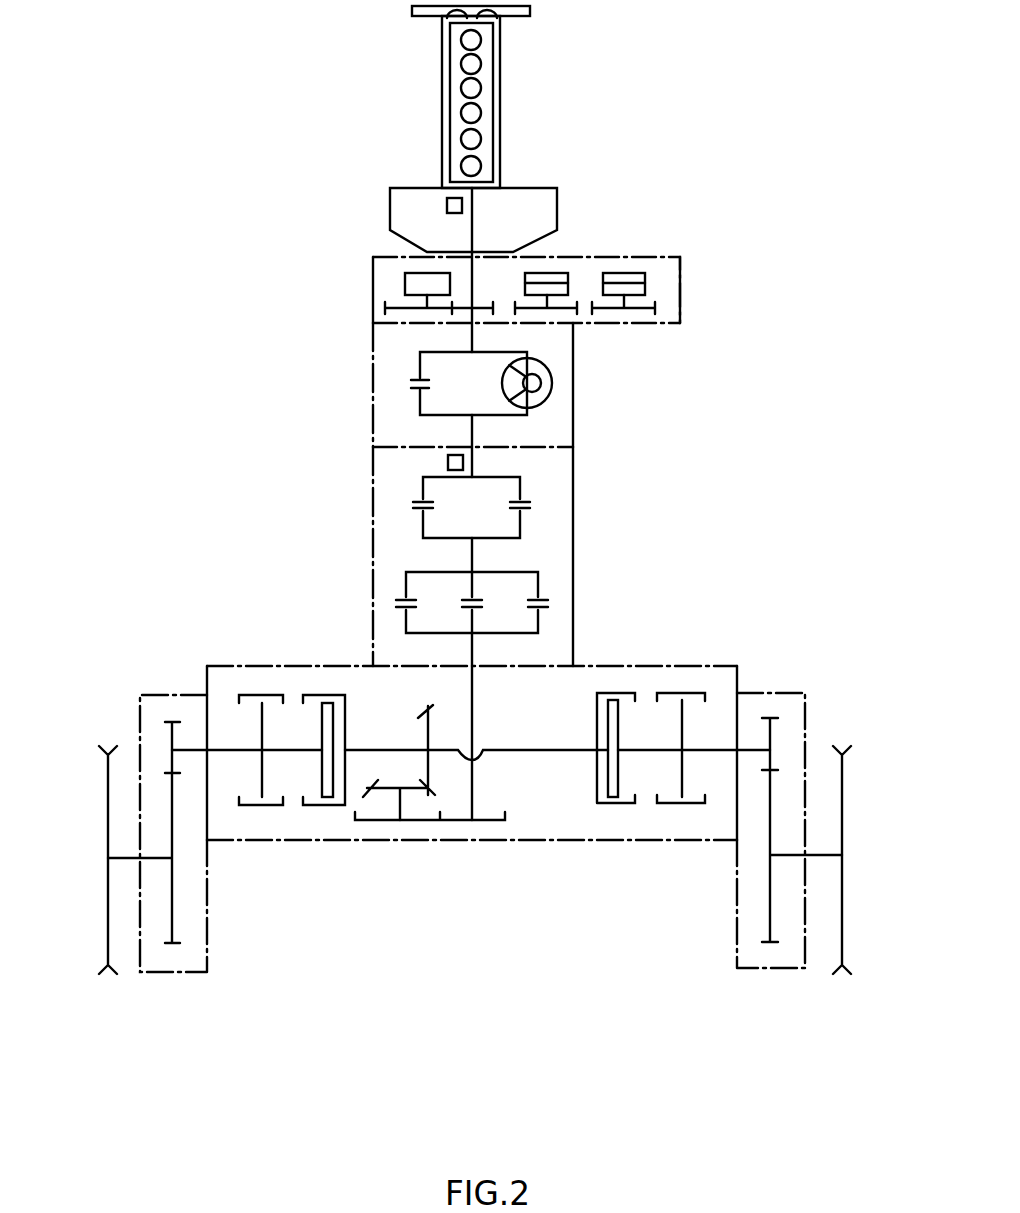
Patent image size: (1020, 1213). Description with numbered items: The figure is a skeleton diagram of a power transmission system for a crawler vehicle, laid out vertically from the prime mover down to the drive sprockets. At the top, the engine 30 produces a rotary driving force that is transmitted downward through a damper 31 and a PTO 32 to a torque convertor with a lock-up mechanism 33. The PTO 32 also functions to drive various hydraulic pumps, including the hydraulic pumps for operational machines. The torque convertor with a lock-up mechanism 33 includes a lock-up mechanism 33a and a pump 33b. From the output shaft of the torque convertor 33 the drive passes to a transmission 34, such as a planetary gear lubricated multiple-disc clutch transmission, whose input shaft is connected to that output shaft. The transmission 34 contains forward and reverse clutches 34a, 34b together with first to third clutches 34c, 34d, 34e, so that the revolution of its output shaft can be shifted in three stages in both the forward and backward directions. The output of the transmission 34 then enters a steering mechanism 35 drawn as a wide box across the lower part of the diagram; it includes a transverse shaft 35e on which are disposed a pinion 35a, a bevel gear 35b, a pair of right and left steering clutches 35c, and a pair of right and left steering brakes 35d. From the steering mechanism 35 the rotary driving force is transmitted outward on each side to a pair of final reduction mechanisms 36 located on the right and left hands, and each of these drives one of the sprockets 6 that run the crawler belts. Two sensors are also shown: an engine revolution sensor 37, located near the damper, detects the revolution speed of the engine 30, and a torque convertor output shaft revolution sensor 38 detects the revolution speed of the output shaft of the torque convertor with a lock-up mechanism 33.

The sprocket 6 is at (108, 818).
The engine 30 is at (500, 78).
The damper 31 is at (540, 205).
The PTO 32 is at (669, 257).
The torque convertor with a lock-up mechanism 33 is at (483, 385).
The lock-up mechanism 33a is at (407, 385).
The pump 33b is at (548, 366).
The transmission 34 is at (480, 541).
The forward clutch 34a is at (413, 505).
The reverse clutch 34b is at (530, 500).
The first clutch 34c is at (398, 605).
The second clutch 34d is at (472, 595).
The third clutch 34e is at (548, 603).
The steering mechanism 35 is at (487, 775).
The pinion 35a is at (412, 792).
The bevel gear 35b is at (432, 762).
The steering clutch 35c is at (328, 808).
The steering brake 35d is at (263, 808).
The transverse shaft 35e is at (582, 753).
The final reduction mechanism 36 is at (190, 973).
The engine revolution sensor 37 is at (447, 205).
The torque convertor output shaft revolution sensor 38 is at (448, 467).